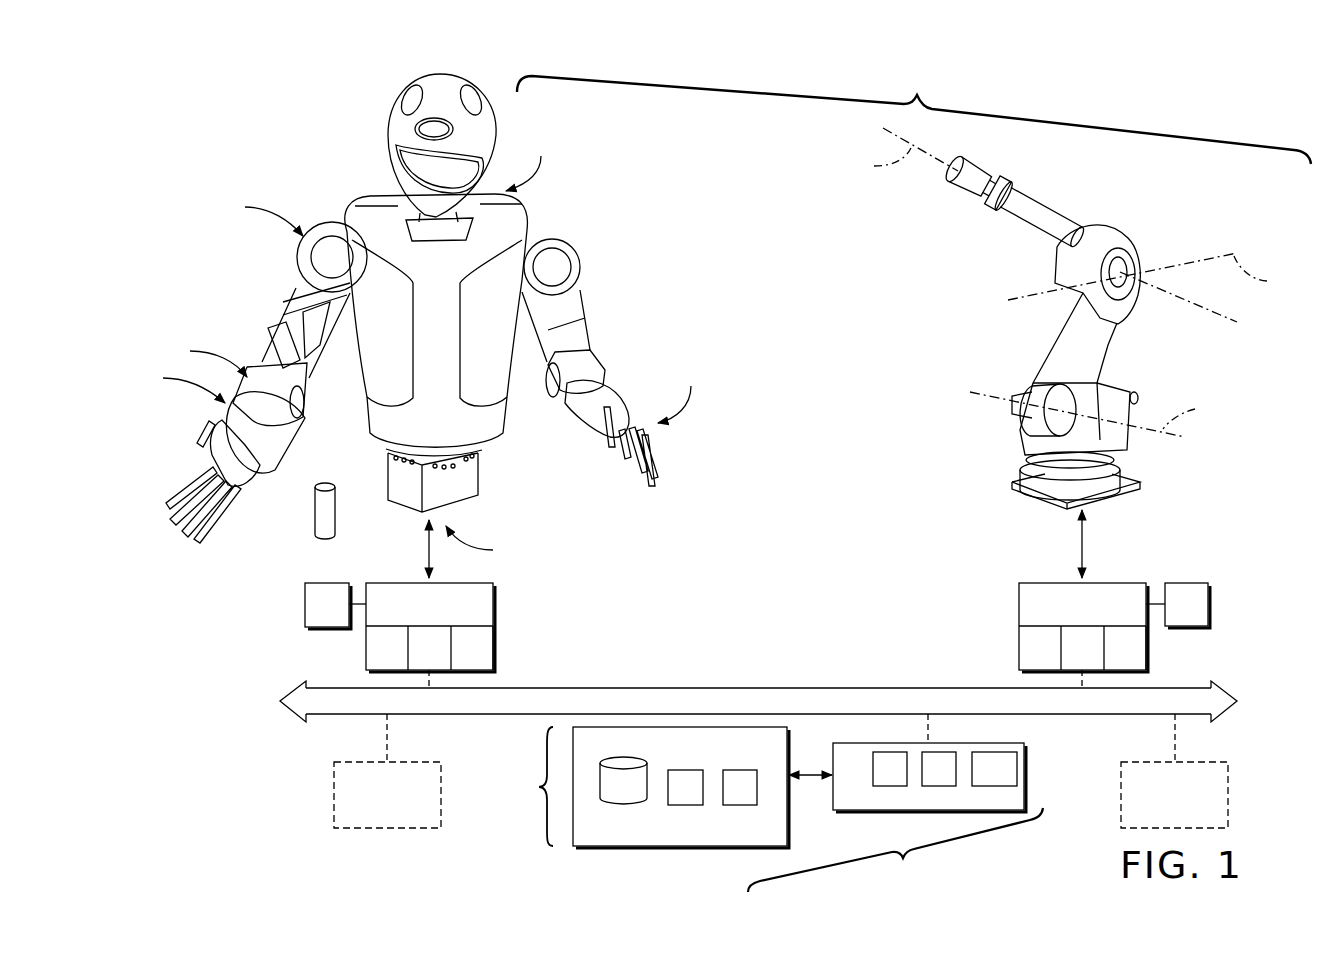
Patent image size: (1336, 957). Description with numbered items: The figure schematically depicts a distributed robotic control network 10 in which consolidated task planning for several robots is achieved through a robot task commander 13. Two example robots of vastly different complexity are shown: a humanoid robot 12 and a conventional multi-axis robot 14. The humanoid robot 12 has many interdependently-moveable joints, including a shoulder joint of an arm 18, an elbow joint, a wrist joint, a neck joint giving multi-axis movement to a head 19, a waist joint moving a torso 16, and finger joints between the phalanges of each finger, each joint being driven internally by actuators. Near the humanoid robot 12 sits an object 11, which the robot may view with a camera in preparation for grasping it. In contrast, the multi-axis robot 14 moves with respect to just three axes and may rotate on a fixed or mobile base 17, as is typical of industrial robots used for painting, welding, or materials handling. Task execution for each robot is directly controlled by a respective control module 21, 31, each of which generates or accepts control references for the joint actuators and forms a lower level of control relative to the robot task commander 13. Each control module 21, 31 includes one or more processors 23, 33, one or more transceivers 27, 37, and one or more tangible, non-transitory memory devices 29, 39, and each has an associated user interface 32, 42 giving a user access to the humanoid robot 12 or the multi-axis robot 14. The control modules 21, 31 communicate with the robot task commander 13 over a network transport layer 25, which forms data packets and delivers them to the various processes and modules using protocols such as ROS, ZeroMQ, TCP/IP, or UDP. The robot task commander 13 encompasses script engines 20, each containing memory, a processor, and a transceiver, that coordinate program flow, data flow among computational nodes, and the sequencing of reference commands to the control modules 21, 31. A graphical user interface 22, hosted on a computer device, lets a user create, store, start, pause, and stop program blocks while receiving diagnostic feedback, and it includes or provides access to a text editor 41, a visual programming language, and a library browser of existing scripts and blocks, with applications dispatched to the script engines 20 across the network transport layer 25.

The distributed robotic control network 10 is at (914, 120).
The object 11 is at (313, 516).
The humanoid robot 12 is at (522, 125).
The robot task commander 13 is at (895, 850).
The multi-axis robot 14 is at (1142, 212).
The torso 16 is at (465, 420).
The base 17 is at (1140, 486).
The arm 18 is at (282, 298).
The head 19 is at (392, 133).
The script engine 20 is at (377, 805).
The control module 21 is at (418, 614).
The graphical user interface 22 is at (952, 770).
The processor 23 is at (376, 658).
The network transport layer 25 is at (1226, 693).
The transceiver 27 is at (419, 658).
The memory device 29 is at (461, 658).
The control module 31 is at (1071, 614).
The user interface 32 is at (316, 614).
The processor 33 is at (1029, 658).
The transceiver 37 is at (1071, 658).
The memory device 39 is at (1114, 658).
The text editor 41 is at (850, 783).
The user interface 42 is at (1176, 614).